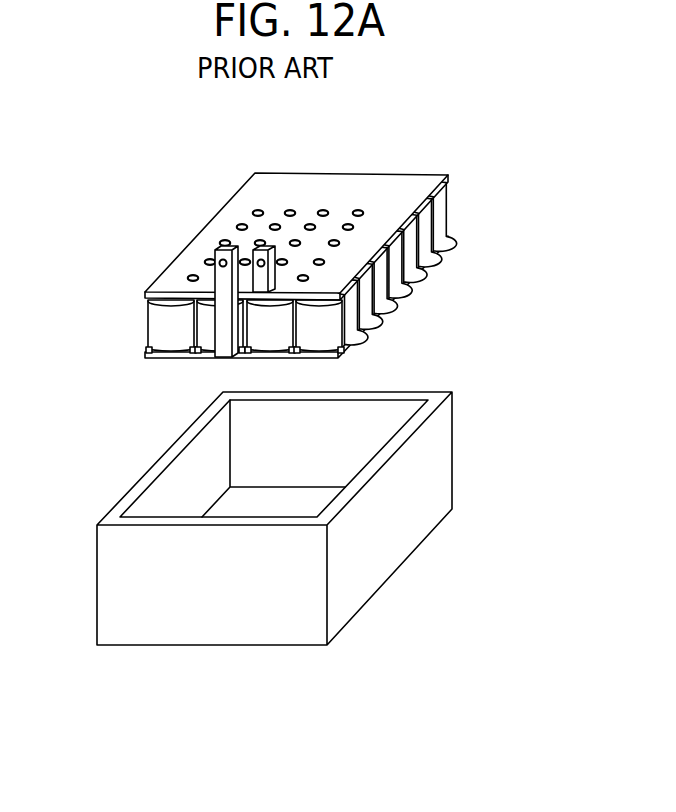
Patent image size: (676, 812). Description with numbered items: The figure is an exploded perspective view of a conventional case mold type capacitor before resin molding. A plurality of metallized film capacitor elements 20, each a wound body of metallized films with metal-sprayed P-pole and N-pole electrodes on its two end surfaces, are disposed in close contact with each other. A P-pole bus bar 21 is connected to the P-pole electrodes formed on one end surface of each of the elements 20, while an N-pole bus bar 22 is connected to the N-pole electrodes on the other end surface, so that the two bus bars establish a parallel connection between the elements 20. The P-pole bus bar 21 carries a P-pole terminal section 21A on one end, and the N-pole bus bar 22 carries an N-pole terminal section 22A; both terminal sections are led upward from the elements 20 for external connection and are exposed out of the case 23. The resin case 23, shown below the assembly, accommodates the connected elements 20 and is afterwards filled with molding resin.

The metallized film capacitor element 20 is at (160, 320).
The P-pole bus bar 21 is at (383, 185).
The P-pole terminal section 21A is at (263, 247).
The N-pole bus bar 22 is at (442, 242).
The N-pole terminal section 22A is at (225, 282).
The case 23 is at (438, 452).